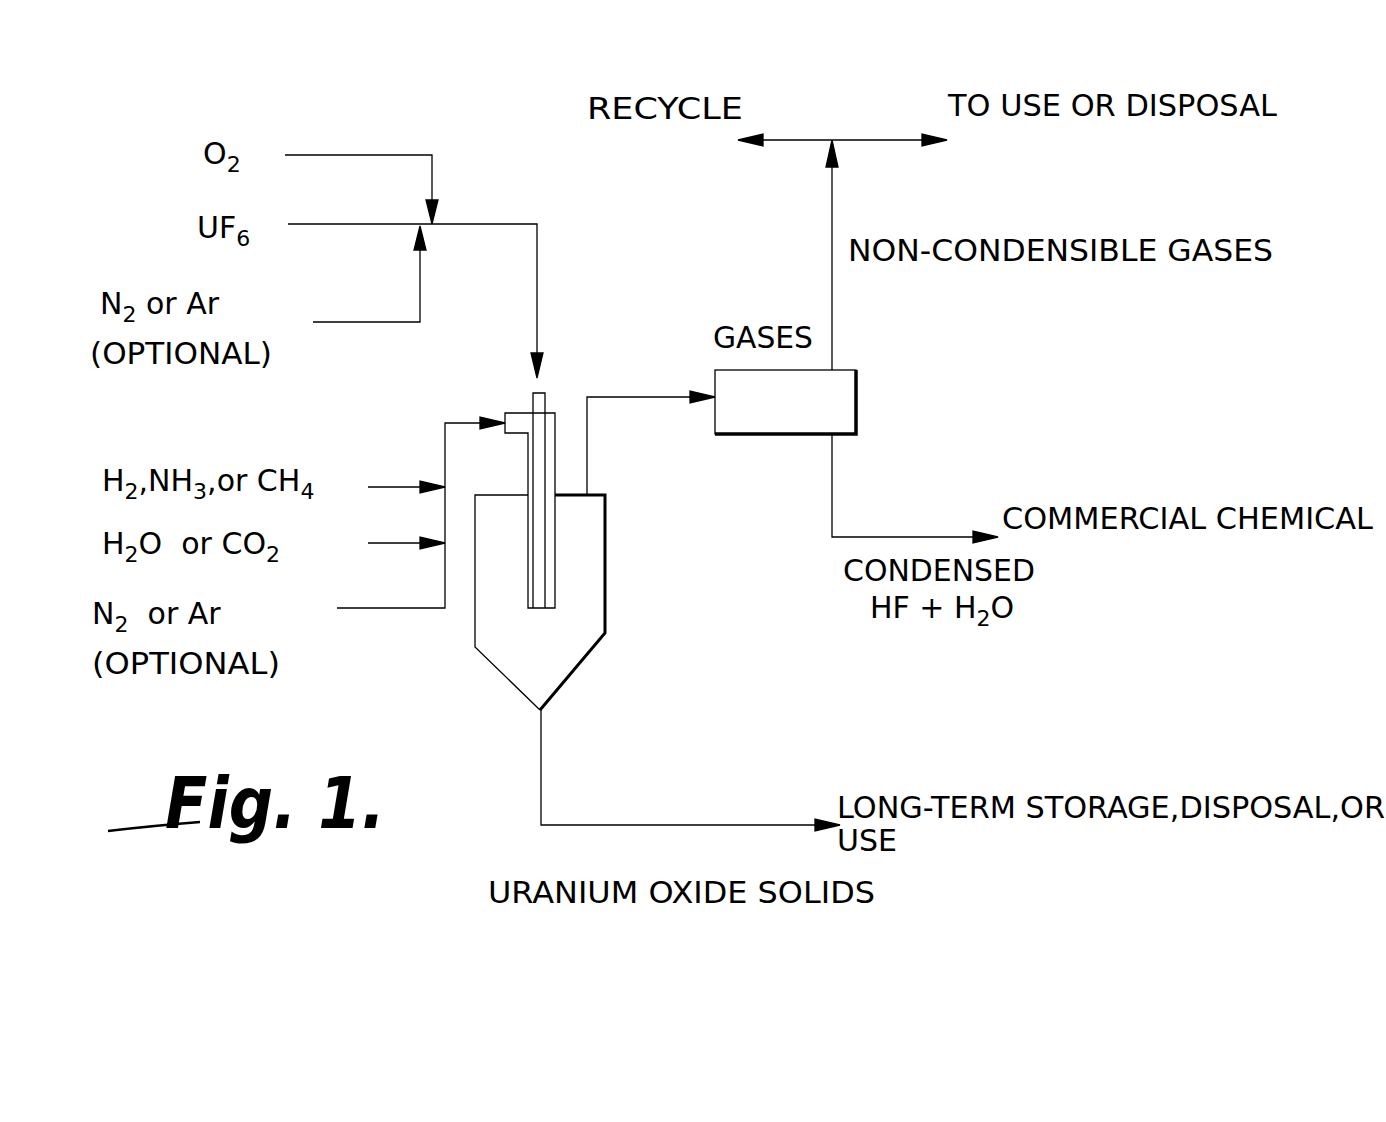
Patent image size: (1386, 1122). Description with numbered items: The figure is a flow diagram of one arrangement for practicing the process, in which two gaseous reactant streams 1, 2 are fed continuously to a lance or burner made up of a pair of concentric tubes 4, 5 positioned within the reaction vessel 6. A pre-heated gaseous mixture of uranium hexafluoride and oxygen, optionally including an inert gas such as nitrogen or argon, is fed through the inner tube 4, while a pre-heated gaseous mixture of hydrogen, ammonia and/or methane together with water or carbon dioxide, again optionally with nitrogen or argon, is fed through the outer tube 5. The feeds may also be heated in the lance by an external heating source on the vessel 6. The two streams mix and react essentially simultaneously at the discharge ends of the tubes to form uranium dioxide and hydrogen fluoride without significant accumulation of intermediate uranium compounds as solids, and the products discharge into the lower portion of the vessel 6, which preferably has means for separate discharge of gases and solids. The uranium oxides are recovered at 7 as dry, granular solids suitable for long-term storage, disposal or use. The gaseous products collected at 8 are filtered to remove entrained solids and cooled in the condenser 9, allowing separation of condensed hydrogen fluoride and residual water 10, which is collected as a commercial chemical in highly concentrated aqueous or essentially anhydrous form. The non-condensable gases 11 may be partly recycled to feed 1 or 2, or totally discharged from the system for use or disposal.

The gaseous reactant stream 1 is at (483, 224).
The gaseous reactant stream 2 is at (470, 420).
The inner tube 4 is at (538, 588).
The outer tube 5 is at (555, 552).
The reaction vessel 6 is at (607, 634).
The uranium oxide solids discharge 7 is at (676, 825).
The gaseous products collection 8 is at (649, 393).
The condenser 9 is at (757, 420).
The condensed HF and residual H2O 10 is at (937, 537).
The non-condensable gases 11 is at (830, 210).